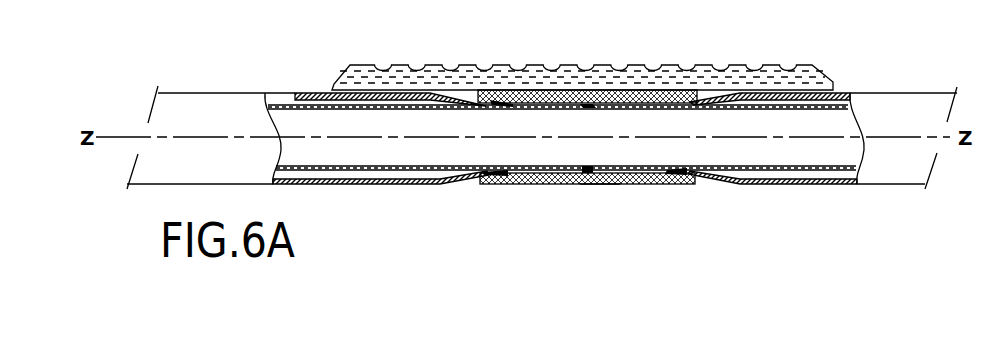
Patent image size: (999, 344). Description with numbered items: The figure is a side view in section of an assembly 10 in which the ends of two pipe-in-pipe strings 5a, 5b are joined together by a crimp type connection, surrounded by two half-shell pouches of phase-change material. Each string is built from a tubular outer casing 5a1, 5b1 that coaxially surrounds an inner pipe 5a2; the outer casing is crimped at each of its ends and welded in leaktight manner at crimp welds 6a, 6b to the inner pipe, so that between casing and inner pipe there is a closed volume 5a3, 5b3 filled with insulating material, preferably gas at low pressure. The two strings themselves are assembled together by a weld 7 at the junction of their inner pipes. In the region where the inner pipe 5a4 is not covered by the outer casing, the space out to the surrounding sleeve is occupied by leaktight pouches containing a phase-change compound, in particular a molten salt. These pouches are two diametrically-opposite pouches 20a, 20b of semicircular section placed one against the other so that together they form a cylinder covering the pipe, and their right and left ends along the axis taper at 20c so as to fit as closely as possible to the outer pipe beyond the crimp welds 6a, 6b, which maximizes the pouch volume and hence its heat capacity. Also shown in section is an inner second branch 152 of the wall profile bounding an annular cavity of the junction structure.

The pipe assembly 10 is at (156, 51).
The string of PiP type pipe 5a is at (328, 192).
The tubular outer casing 5a1 is at (215, 102).
The inner pipe 5a2 is at (447, 181).
The volume filled with insulating material 5a3 is at (290, 100).
The inner pipe 5a4 is at (545, 108).
The string of PiP type pipe 5b is at (909, 76).
The tubular outer casing 5b1 is at (943, 103).
The volume filled with insulating material 5b3 is at (743, 102).
The inner second branch 152 is at (475, 97).
The pouch of semicircular section 20a is at (630, 92).
The pouch of semicircular section 20b is at (598, 186).
The tapering end of pouch 20c is at (513, 104).
The crimp weld 6a is at (510, 184).
The crimp weld 6b is at (672, 185).
The weld 7 is at (580, 188).